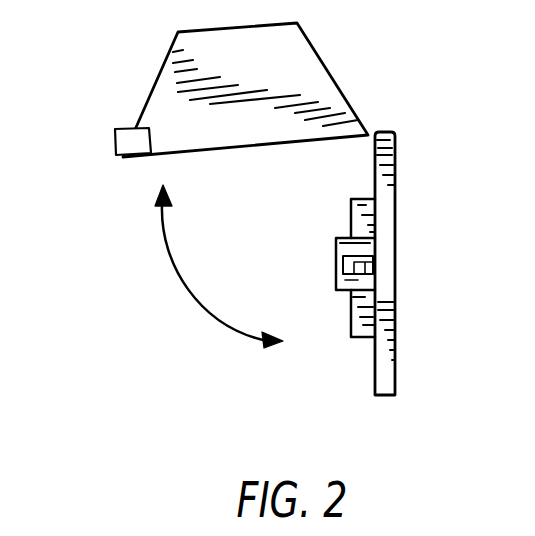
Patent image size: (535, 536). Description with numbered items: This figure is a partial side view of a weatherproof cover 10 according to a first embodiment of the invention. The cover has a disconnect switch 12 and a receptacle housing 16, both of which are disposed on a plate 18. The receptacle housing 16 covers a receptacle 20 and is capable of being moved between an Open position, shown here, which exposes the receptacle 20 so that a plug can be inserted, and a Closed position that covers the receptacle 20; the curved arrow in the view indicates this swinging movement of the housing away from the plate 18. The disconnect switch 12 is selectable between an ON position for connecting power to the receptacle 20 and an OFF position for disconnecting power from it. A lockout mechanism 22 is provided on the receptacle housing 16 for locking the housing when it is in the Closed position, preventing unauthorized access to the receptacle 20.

The weatherproof cover 10 is at (58, 52).
The disconnect switch 12 is at (370, 243).
The receptacle housing 16 is at (327, 68).
The plate 18 is at (397, 150).
The receptacle 20 is at (362, 337).
The lockout mechanism 22 is at (115, 145).